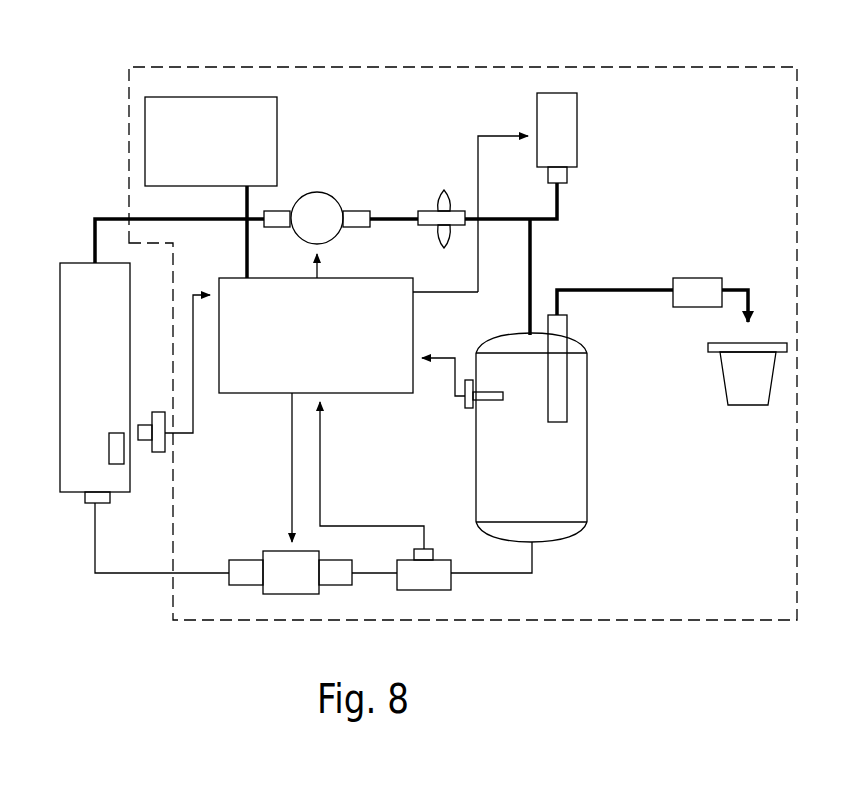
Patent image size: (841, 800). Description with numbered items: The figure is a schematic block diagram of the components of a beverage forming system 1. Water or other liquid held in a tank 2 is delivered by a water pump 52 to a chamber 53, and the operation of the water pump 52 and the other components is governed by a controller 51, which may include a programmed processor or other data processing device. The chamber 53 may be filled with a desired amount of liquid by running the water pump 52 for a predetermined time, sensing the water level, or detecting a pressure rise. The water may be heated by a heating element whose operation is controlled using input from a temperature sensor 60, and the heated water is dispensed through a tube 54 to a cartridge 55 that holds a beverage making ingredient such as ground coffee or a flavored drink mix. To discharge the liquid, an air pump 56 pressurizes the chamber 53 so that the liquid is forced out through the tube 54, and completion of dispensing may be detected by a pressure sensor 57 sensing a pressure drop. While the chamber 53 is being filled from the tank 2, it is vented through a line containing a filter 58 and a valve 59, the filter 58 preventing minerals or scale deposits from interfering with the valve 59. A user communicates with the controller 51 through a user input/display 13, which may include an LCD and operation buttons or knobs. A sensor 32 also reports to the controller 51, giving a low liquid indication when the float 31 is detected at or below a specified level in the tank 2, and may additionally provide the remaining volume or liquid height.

The beverage forming system 1 is at (100, 47).
The tank 2 is at (60, 405).
The user input/display 13 is at (277, 99).
The float 31 is at (109, 448).
The sensor 32 is at (162, 452).
The controller 51 is at (232, 395).
The water pump 52 is at (272, 551).
The chamber 53 is at (596, 481).
The tube 54 is at (568, 388).
The cartridge 55 is at (750, 405).
The air pump 56 is at (577, 130).
The pressure sensor 57 is at (451, 580).
The filter 58 is at (447, 203).
The valve 59 is at (318, 192).
The temperature sensor 60 is at (469, 372).